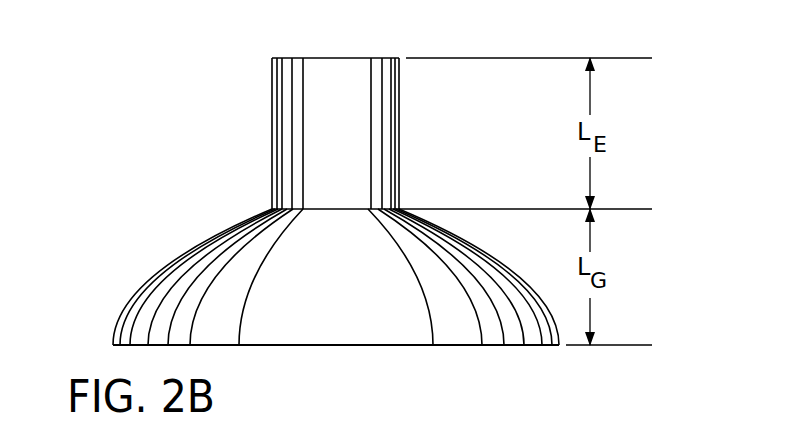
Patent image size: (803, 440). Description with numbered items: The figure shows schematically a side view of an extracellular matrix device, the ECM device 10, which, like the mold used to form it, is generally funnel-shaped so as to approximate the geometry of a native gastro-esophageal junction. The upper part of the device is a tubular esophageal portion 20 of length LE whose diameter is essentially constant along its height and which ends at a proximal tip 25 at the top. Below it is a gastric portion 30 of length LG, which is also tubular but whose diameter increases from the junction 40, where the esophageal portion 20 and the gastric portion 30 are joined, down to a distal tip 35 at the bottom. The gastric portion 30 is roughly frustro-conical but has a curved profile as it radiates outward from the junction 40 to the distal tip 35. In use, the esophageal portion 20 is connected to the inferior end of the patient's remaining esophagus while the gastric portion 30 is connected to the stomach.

The ECM device 10 is at (188, 85).
The esophageal portion 20 is at (285, 147).
The proximal tip 25 is at (337, 58).
The gastric portion 30 is at (218, 285).
The distal tip 35 is at (398, 345).
The junction 40 is at (272, 209).